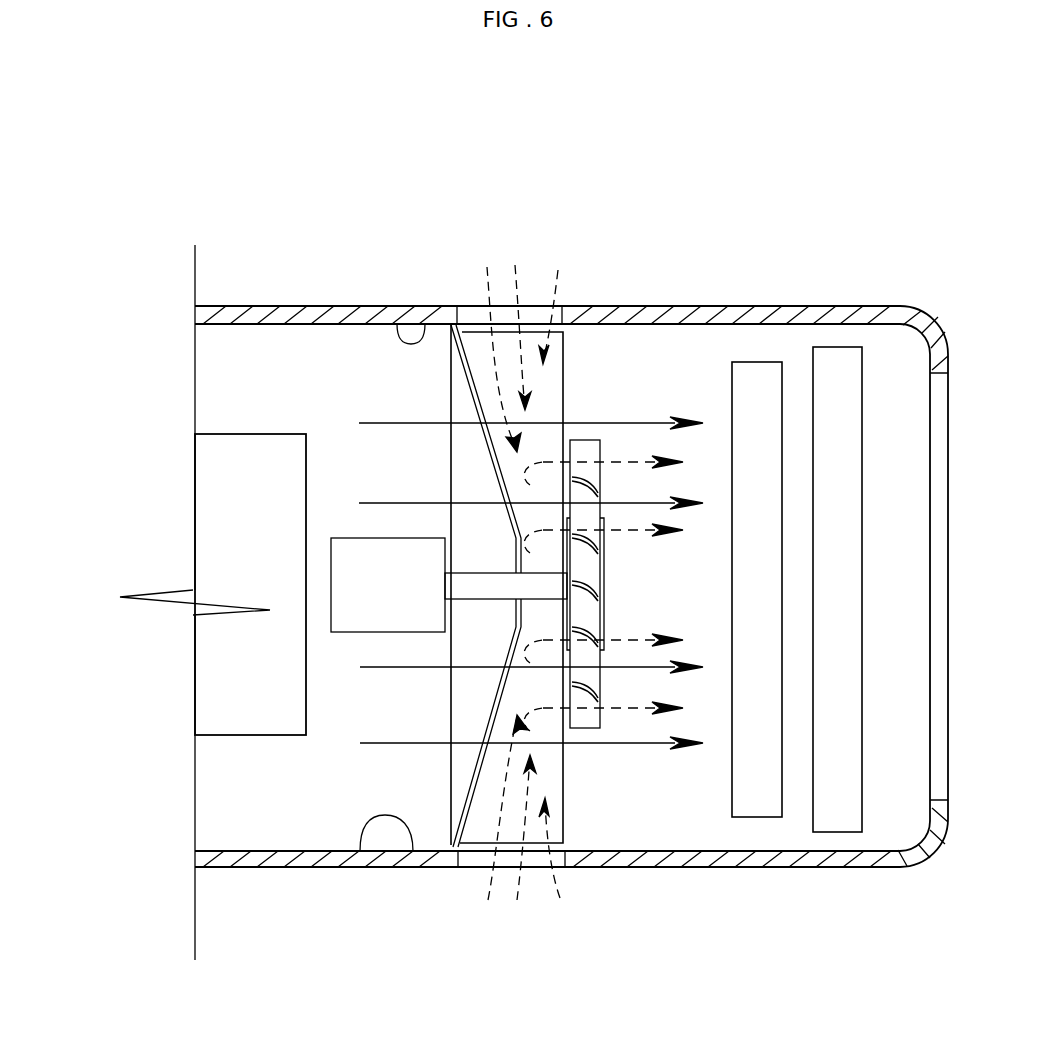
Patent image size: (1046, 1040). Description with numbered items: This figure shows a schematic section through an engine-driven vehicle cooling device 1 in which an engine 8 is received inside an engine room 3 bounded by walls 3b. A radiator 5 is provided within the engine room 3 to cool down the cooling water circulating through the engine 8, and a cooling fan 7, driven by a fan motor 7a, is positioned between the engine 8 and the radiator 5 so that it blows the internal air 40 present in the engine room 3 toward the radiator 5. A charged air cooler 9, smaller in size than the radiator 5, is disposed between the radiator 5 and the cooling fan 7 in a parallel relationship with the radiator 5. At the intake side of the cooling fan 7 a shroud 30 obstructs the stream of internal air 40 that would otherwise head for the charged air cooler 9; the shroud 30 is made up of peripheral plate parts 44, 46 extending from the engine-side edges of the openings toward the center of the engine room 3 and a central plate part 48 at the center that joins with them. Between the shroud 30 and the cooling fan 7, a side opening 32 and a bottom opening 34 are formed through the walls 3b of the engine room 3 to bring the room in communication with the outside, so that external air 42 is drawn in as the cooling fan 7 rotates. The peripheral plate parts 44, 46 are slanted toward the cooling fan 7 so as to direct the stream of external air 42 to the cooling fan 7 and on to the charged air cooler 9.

The engine-driven vehicle cooling device 1 is at (675, 315).
The engine room 3 is at (390, 364).
The wall of the engine room 3b is at (420, 324).
The radiator 5 is at (839, 360).
The cooling fan 7 is at (593, 447).
The fan motor 7a is at (345, 548).
The engine 8 is at (225, 471).
The charged air cooler 9 is at (756, 377).
The shroud 30 is at (548, 776).
The side opening 32 is at (483, 313).
The bottom opening 34 is at (487, 862).
The internal air 40 is at (440, 773).
The external air 42 is at (467, 471).
The peripheral plate part 44 is at (497, 705).
The peripheral plate part 46 is at (477, 396).
The central plate part 48 is at (518, 609).